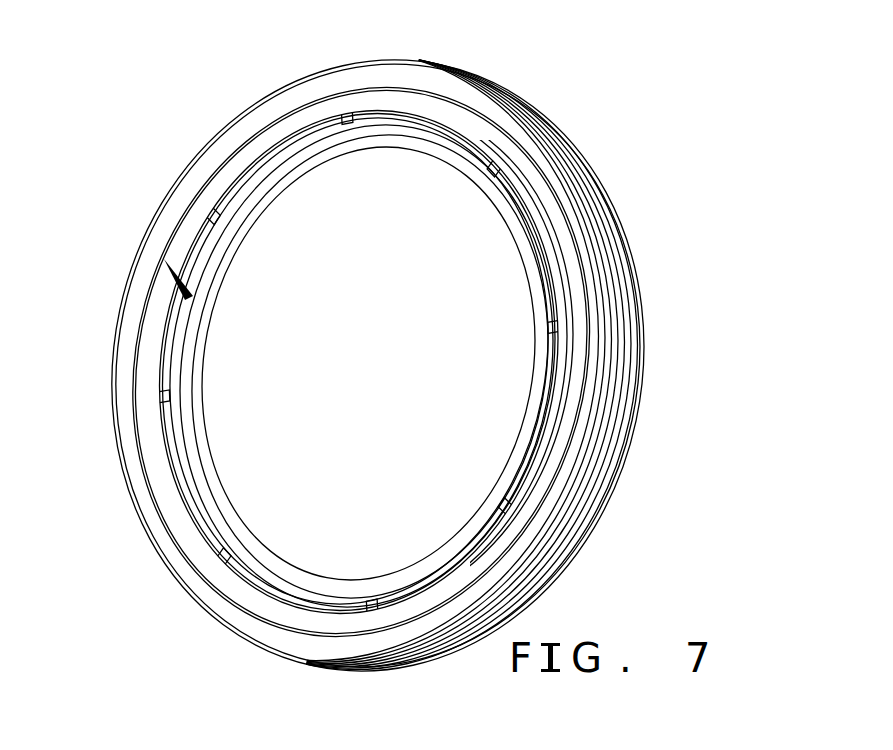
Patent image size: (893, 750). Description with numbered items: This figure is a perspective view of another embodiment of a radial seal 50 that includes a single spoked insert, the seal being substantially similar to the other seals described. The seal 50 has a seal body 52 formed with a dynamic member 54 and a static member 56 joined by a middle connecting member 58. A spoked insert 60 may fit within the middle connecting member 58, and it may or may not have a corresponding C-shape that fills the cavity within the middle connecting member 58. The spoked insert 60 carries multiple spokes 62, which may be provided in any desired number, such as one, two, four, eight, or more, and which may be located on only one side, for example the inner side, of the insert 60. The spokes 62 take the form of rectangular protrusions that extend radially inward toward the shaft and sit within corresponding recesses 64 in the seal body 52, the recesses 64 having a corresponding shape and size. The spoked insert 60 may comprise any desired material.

The radial seal 50 is at (641, 197).
The seal body 52 is at (532, 133).
The dynamic member 54 is at (246, 510).
The static member 56 is at (220, 635).
The middle connecting member 58 is at (182, 570).
The spoked insert 60 is at (163, 503).
The spokes 62 is at (211, 217).
The recesses 64 is at (189, 300).